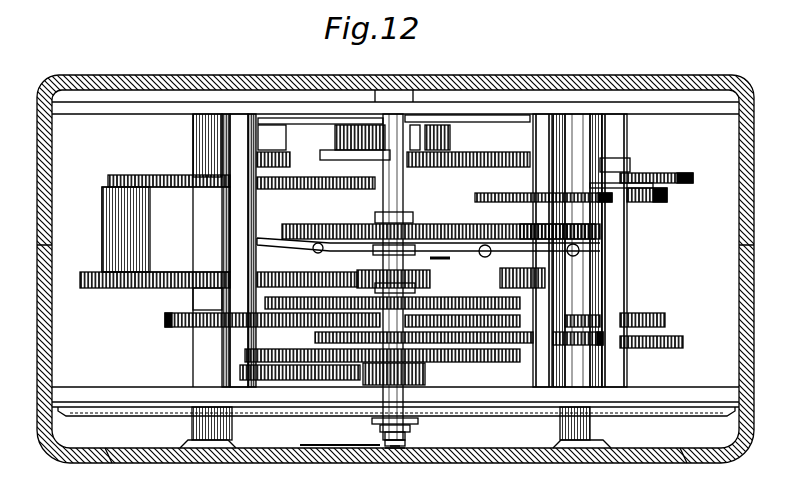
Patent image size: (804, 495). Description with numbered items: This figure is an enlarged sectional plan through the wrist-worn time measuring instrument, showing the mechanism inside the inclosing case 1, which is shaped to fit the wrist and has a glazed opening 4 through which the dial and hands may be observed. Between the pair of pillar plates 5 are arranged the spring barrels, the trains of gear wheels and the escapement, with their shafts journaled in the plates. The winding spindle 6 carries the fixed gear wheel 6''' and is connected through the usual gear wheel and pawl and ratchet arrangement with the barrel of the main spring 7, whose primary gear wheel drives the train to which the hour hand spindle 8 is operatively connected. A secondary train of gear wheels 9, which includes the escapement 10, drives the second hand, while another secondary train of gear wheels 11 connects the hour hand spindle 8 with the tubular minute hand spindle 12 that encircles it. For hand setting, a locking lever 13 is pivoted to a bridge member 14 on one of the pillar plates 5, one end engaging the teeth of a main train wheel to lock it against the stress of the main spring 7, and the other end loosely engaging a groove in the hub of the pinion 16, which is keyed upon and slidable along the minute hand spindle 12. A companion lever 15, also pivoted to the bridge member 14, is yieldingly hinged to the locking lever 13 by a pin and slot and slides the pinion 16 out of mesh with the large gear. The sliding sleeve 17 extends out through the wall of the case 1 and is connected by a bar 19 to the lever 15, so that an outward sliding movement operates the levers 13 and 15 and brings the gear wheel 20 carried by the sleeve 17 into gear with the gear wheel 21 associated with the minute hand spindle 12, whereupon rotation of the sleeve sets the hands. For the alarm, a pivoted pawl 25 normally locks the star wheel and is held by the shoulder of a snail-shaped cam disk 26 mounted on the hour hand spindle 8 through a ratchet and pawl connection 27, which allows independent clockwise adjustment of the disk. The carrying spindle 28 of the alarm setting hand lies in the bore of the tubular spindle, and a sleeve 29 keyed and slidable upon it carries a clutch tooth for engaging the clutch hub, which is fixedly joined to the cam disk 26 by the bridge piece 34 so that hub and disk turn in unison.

The inclosing case 1 is at (181, 75).
The glazed opening 4 is at (170, 463).
The pillar plates 5 is at (133, 114).
The winding spindle 6 is at (211, 250).
The gear wheel 6''' is at (242, 320).
The main spring 7 is at (155, 231).
The hour hand spindle 8 is at (405, 189).
The secondary train of gear wheels 9 is at (455, 238).
The escapement 10 is at (672, 175).
The secondary train of gear wheels 11 is at (421, 327).
The minute hand spindle 12 is at (410, 420).
The locking lever 13 is at (266, 245).
The bridge member 14 is at (460, 243).
The companion lever 15 is at (516, 256).
The pinion 16 is at (432, 279).
The sliding sleeve 17 is at (585, 292).
The bar 19 is at (592, 247).
The gear wheel 20 is at (660, 313).
The gear wheel 21 is at (683, 340).
The pivoted pawl 25 is at (498, 168).
The cam disk 26 is at (480, 167).
The ratchet and pawl connection 27 is at (430, 128).
The carrying spindle 28 is at (398, 452).
The sleeve 29 is at (396, 102).
The bridge piece 34 is at (488, 125).